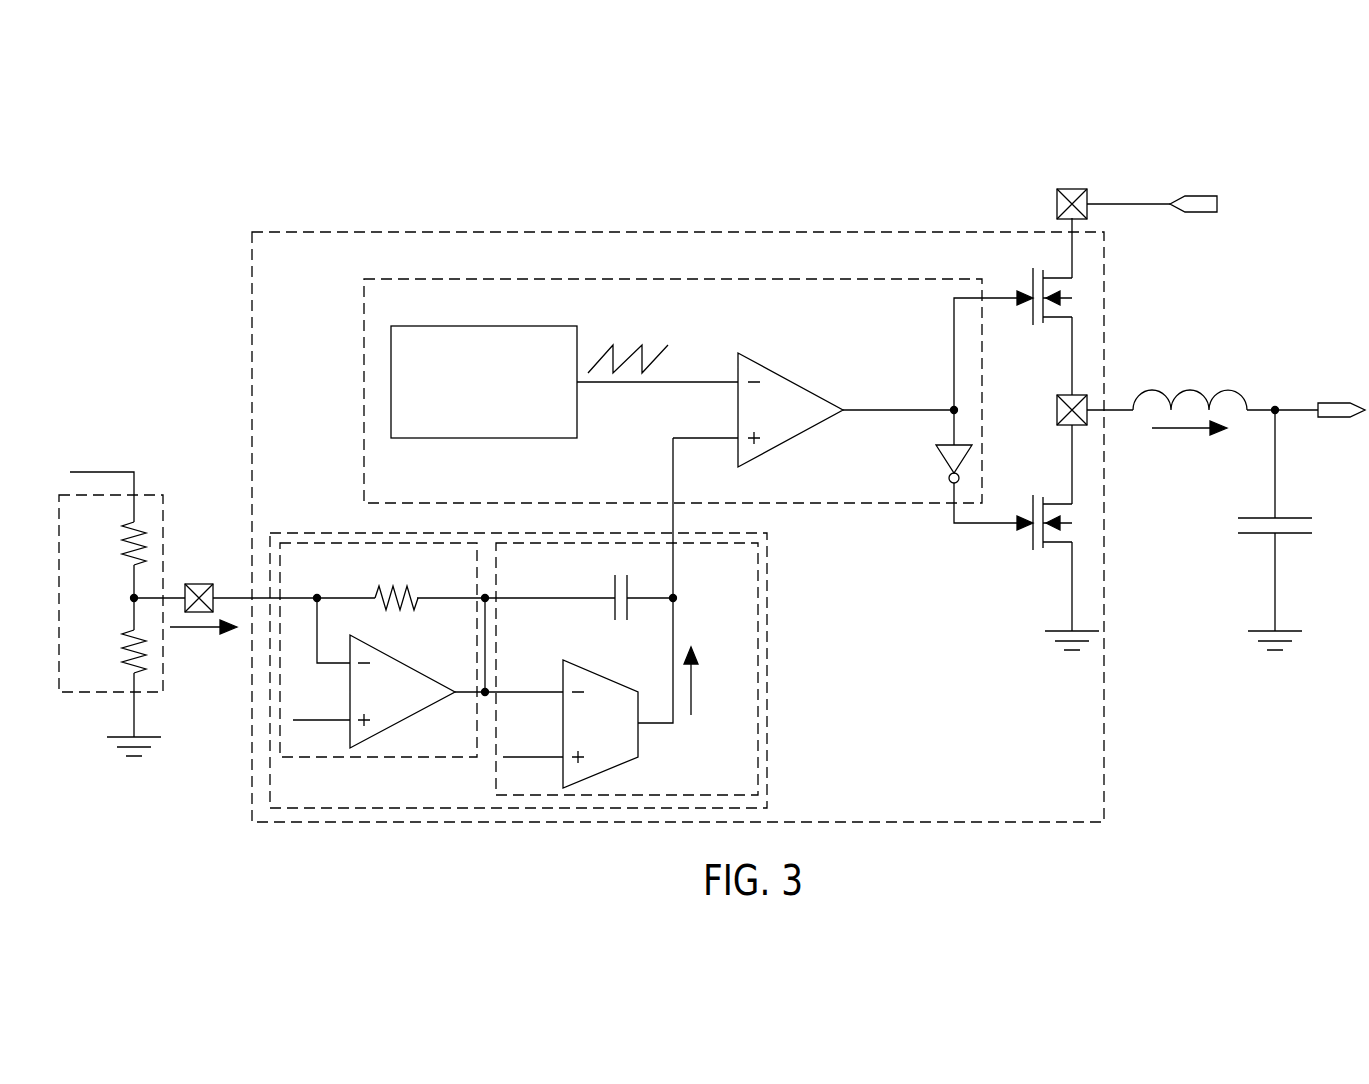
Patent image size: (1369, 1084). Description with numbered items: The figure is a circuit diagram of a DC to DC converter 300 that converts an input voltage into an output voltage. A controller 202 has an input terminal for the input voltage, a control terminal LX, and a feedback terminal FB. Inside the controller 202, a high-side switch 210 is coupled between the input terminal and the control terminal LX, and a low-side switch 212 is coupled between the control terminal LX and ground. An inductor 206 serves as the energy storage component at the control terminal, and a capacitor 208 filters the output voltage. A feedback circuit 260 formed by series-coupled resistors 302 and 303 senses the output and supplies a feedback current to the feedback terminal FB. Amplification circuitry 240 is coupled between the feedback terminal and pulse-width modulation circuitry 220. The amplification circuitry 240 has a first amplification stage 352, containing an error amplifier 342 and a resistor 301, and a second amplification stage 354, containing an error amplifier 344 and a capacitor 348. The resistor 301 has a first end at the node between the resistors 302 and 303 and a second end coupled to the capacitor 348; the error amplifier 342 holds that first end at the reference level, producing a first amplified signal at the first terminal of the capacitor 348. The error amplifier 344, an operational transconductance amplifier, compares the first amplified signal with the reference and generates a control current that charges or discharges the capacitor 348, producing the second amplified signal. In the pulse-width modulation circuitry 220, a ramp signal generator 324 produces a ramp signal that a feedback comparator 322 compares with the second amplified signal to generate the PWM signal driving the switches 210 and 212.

The DC to DC converter 300 is at (261, 181).
The controller 202 is at (645, 232).
The pulse-width modulation circuitry 220 is at (818, 279).
The ramp signal generator 324 is at (523, 325).
The feedback comparator 322 is at (778, 372).
The high-side switch 210 is at (1033, 311).
The low-side switch 212 is at (1032, 530).
The inductor 206 is at (1188, 388).
The capacitor 208 is at (1283, 518).
The feedback circuit 260 is at (86, 692).
The resistor 302 is at (122, 556).
The resistor 303 is at (122, 646).
The amplification circuitry 240 is at (767, 638).
The first amplification stage 352 is at (303, 757).
The second amplification stage 354 is at (495, 767).
The resistor 301 is at (407, 585).
The error amplifier 342 is at (393, 655).
The error amplifier 344 is at (587, 667).
The capacitor 348 is at (615, 582).